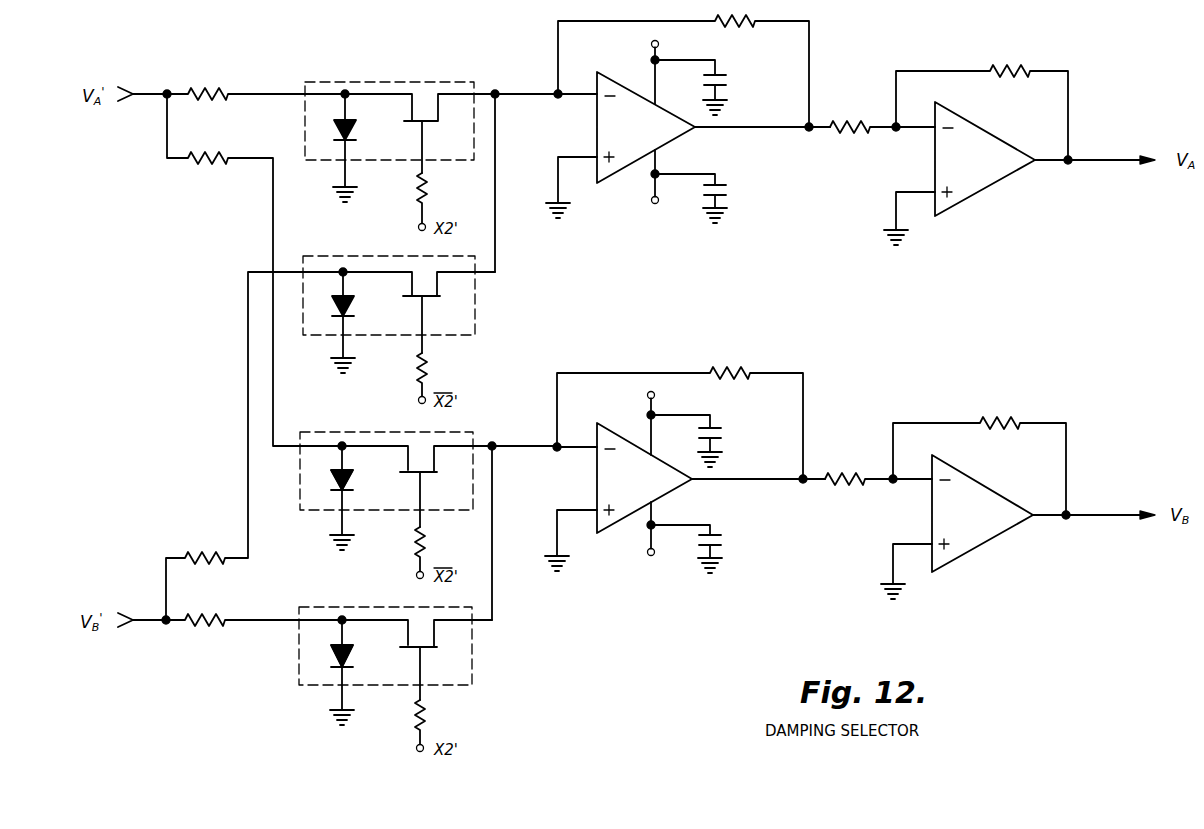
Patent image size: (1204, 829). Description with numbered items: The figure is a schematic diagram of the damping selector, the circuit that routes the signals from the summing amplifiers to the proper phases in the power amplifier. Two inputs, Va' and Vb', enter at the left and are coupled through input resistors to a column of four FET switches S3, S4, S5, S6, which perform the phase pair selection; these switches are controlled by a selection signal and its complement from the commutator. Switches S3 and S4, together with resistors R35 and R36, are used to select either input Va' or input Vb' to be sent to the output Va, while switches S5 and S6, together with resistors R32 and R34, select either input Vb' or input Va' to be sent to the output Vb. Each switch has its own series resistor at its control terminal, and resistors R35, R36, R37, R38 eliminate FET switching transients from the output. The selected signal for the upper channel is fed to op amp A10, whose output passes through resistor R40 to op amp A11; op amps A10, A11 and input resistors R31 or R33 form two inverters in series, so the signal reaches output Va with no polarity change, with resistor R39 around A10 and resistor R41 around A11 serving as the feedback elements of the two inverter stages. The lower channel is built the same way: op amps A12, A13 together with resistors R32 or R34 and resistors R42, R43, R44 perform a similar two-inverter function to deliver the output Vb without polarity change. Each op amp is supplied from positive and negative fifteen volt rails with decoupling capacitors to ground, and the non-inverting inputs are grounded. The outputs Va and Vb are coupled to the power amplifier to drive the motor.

The resistor R31 is at (256, 84).
The resistor R32 is at (254, 270).
The resistor R33 is at (254, 446).
The resistor R34 is at (254, 630).
The resistor R35 is at (439, 202).
The resistor R36 is at (439, 378).
The resistor R37 is at (438, 553).
The resistor R38 is at (438, 726).
The resistor R39 is at (683, 71).
The resistor R40 is at (863, 137).
The resistor R41 is at (982, 112).
The resistor R42 is at (680, 423).
The resistor R43 is at (859, 489).
The resistor R44 is at (979, 466).
The switch S3 is at (402, 142).
The switch S4 is at (399, 314).
The switch S5 is at (398, 491).
The switch S6 is at (395, 666).
The op amp A10 is at (636, 130).
The op amp A11 is at (959, 173).
The op amp A12 is at (633, 483).
The op amp A13 is at (957, 527).